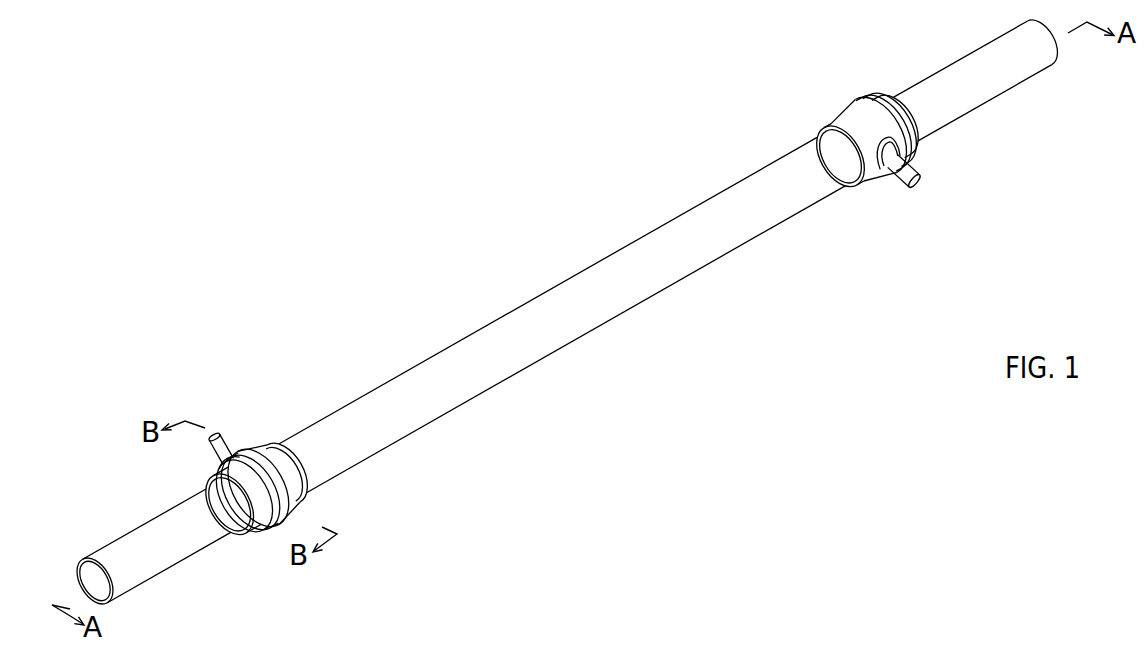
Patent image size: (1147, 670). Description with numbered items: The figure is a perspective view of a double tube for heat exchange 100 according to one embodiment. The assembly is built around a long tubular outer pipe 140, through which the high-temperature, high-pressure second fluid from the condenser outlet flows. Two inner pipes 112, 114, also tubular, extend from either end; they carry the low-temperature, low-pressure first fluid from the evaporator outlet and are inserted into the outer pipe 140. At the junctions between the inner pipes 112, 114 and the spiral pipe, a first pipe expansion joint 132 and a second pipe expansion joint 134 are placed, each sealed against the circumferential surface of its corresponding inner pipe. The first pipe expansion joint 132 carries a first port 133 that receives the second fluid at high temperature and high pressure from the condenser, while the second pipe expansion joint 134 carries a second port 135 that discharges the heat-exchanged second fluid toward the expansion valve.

The double tube for heat exchange 100 is at (570, 150).
The inner pipe 112 is at (165, 557).
The inner pipe 114 is at (982, 92).
The first pipe expansion joint 132 is at (267, 433).
The first port 133 is at (222, 432).
The second pipe expansion joint 134 is at (844, 99).
The second port 135 is at (917, 191).
The outer pipe 140 is at (572, 333).